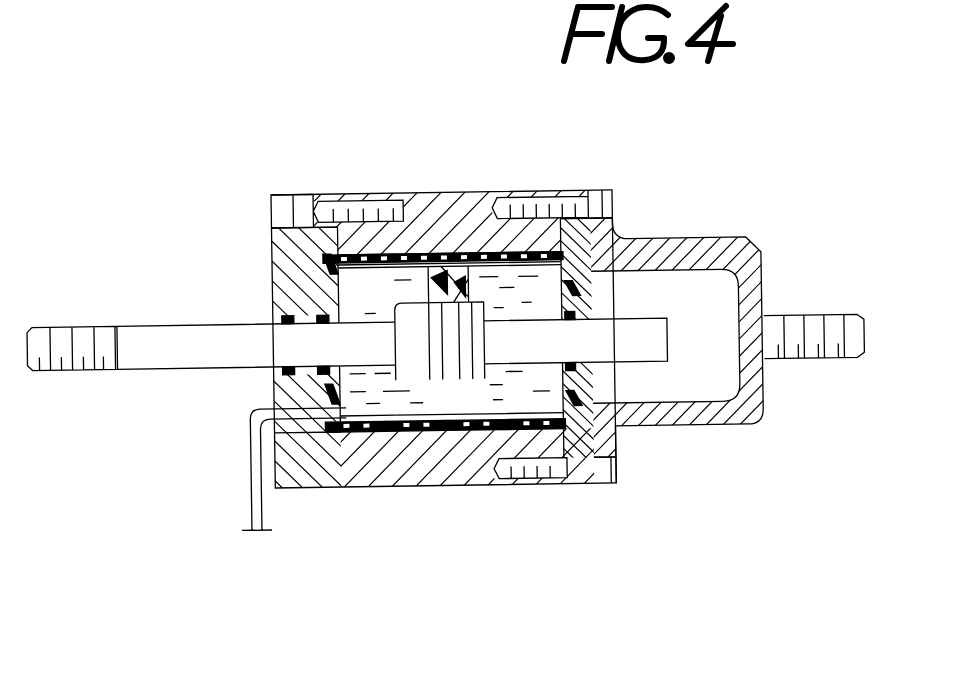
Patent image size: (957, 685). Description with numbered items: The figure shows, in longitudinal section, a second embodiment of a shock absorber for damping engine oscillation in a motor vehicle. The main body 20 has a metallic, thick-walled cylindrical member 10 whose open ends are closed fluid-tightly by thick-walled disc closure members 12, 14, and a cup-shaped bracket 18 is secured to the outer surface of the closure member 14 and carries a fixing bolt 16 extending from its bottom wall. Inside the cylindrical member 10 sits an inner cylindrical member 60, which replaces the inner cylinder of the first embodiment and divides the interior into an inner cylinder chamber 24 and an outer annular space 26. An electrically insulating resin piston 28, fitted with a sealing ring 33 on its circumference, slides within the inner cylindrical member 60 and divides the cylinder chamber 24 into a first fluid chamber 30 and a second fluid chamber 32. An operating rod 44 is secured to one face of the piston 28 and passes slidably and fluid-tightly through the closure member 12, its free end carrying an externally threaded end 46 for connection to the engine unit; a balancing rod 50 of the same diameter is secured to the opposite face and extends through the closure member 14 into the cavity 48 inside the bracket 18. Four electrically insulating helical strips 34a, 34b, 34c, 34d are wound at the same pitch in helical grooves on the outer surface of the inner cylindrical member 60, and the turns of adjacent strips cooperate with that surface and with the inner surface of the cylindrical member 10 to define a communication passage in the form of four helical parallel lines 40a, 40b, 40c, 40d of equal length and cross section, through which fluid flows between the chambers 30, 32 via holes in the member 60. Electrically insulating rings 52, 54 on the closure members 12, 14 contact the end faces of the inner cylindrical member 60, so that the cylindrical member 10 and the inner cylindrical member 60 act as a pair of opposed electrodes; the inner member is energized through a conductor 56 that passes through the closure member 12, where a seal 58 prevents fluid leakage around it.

The cylindrical member 10 is at (472, 195).
The closure member 12 is at (283, 272).
The closure member 14 is at (578, 448).
The fixing bolt 16 is at (710, 256).
The cup-shaped bracket 18 is at (812, 330).
The main body 20 is at (598, 193).
The cylinder chamber 24 is at (562, 409).
The outer annular space 26 is at (360, 255).
The piston 28 is at (427, 294).
The first fluid chamber 30 is at (342, 314).
The second fluid chamber 32 is at (552, 291).
The sealing ring 33 is at (438, 195).
The helical strip 34a is at (377, 433).
The helical strip 34b is at (428, 435).
The helical strip 34c is at (464, 436).
The helical strip 34d is at (518, 437).
The helical parallel line 40a is at (351, 437).
The helical parallel line 40b is at (381, 435).
The helical parallel line 40c is at (436, 435).
The helical parallel line 40d is at (474, 436).
The operating rod 44 is at (145, 366).
The externally threaded end 46 is at (59, 365).
The cavity 48 is at (738, 379).
The balancing rod 50 is at (624, 353).
The electrically insulating ring 52 is at (317, 268).
The electrically insulating ring 54 is at (575, 262).
The conductor 56 is at (246, 495).
The seal 58 is at (282, 393).
The inner cylindrical member 60 is at (410, 197).